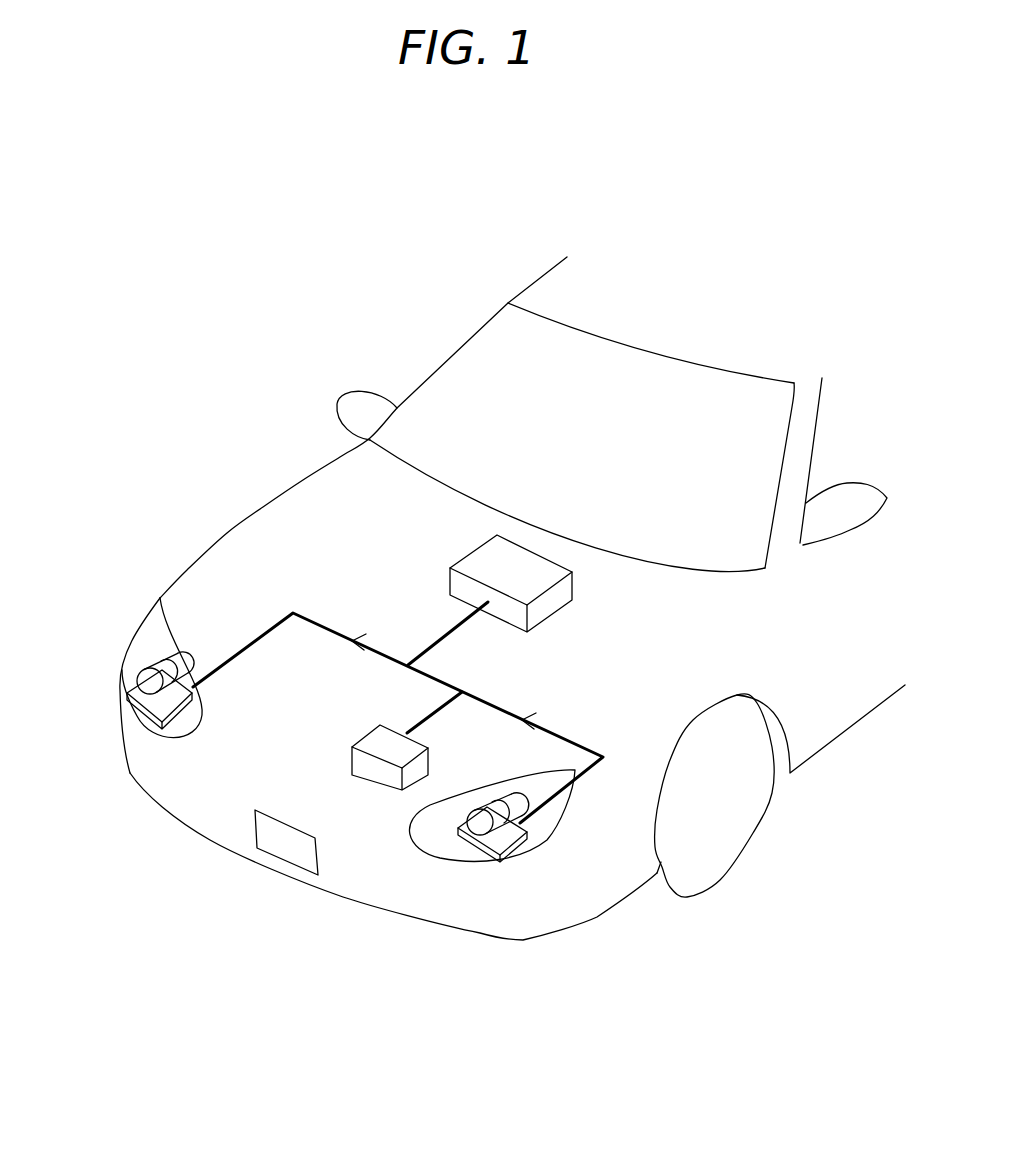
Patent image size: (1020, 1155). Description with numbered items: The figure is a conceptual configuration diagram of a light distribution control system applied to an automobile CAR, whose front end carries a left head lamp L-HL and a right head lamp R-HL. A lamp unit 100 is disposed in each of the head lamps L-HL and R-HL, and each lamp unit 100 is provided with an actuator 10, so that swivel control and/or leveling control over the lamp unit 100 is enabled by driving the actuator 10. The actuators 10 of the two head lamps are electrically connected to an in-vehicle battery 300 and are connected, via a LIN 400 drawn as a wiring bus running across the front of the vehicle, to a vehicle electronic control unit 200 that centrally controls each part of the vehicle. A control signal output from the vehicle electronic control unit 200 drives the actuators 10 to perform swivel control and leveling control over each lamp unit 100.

The automobile CAR is at (425, 378).
The right head lamp R-HL is at (140, 625).
The left head lamp L-HL is at (558, 825).
The actuator 10 is at (148, 708).
The lamp unit 100 is at (140, 675).
The vehicle electronic control unit 200 is at (468, 556).
The in-vehicle battery 300 is at (377, 743).
The LIN 400 is at (497, 700).